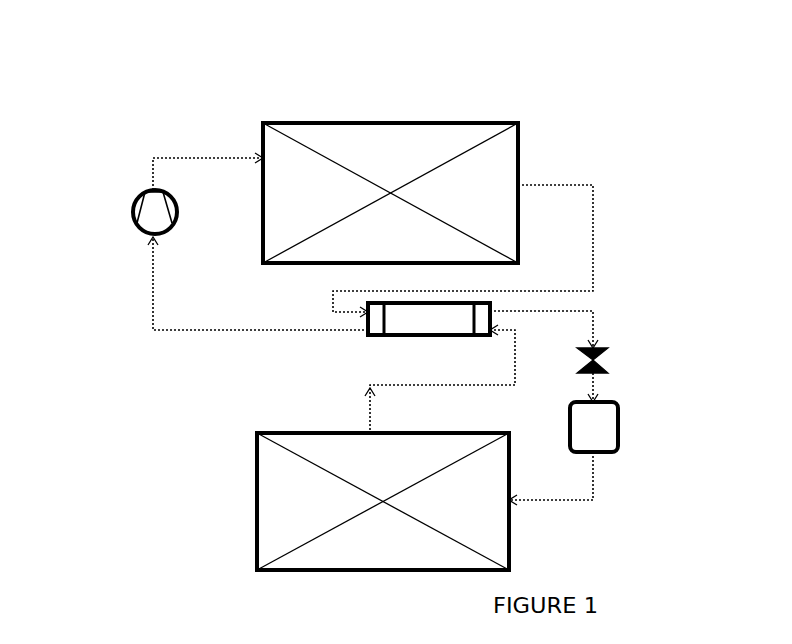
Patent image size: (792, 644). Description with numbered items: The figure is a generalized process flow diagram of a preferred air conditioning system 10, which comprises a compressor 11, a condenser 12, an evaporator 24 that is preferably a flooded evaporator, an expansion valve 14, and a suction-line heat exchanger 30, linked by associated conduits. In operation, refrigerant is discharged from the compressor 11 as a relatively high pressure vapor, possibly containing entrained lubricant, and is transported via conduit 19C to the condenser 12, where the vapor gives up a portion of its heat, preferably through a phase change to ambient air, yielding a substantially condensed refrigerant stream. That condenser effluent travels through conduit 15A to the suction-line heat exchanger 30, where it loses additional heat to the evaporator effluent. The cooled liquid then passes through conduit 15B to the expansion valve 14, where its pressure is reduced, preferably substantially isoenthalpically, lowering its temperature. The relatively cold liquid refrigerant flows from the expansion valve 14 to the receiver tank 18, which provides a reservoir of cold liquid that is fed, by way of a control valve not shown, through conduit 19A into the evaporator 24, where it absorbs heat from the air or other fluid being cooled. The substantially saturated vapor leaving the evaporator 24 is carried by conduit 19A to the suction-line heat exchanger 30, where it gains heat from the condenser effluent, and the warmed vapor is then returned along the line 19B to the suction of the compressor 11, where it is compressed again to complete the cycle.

The air conditioning system 10 is at (597, 73).
The compressor 11 is at (132, 202).
The condenser 12 is at (385, 123).
The expansion valve 14 is at (600, 362).
The conduit 15A is at (593, 232).
The conduit 15B is at (593, 318).
The receiver tank 18 is at (618, 448).
The conduit 19A is at (370, 410).
The return fluid line to pump 19B is at (153, 290).
The conduit 19C is at (185, 157).
The evaporator 24 is at (257, 487).
The suction-line heat exchanger 30 is at (423, 335).